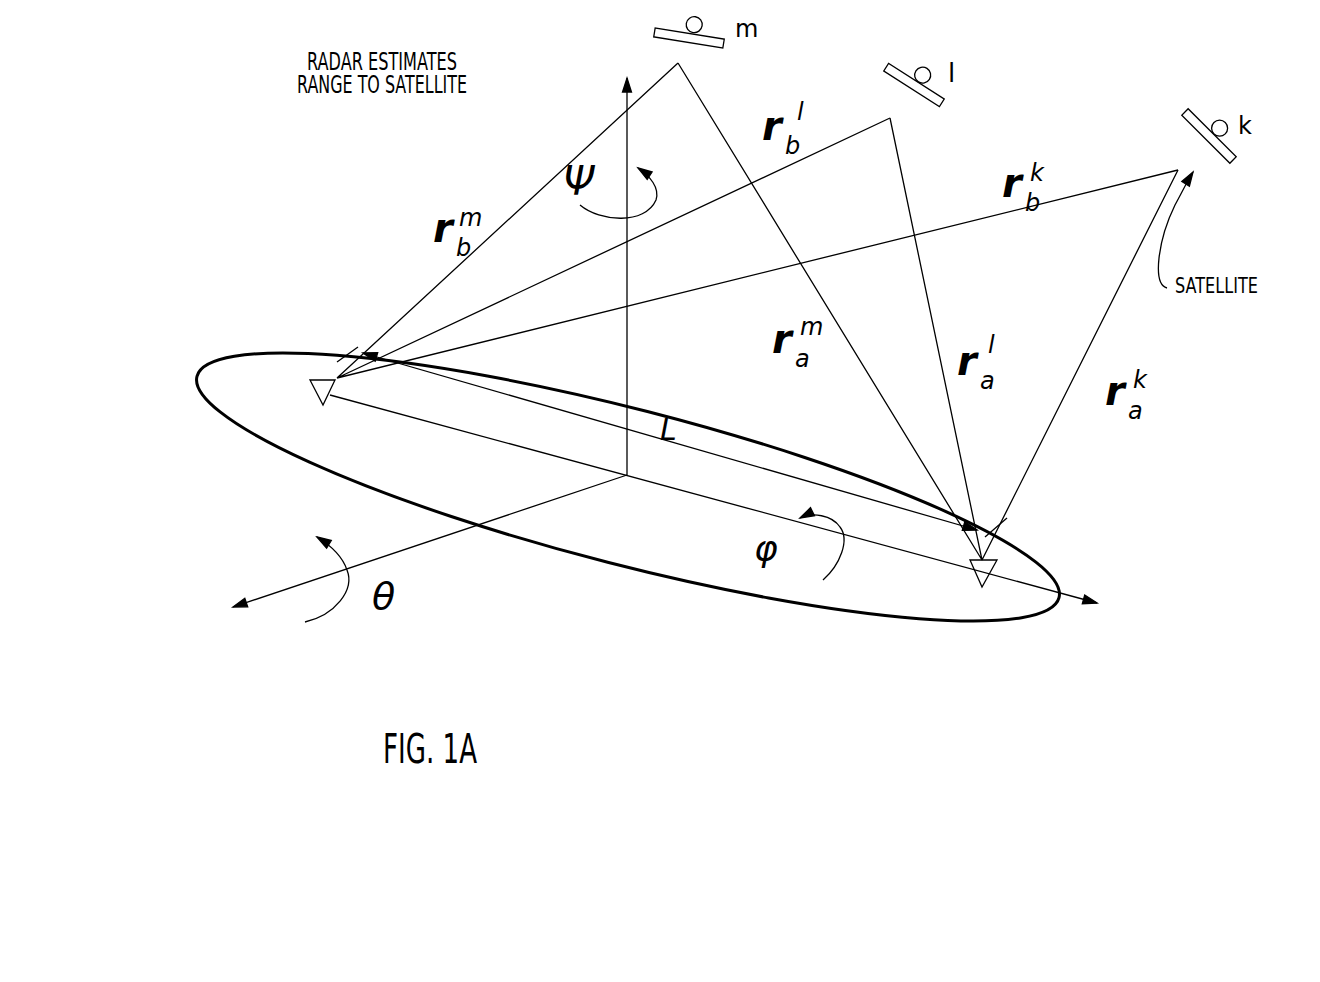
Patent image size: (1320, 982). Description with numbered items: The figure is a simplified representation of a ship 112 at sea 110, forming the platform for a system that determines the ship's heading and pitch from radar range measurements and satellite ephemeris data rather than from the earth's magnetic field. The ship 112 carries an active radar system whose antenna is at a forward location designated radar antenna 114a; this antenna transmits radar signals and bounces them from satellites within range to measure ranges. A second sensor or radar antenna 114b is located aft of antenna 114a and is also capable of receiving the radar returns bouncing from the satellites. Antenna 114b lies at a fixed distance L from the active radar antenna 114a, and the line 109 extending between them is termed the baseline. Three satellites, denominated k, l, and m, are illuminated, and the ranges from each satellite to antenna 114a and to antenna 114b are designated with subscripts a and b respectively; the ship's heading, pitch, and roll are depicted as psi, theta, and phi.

The baseline 109 is at (603, 422).
The sea 110 is at (860, 701).
The ship 112 is at (575, 570).
The radar antenna 114a is at (982, 588).
The radar antenna 114b is at (308, 395).